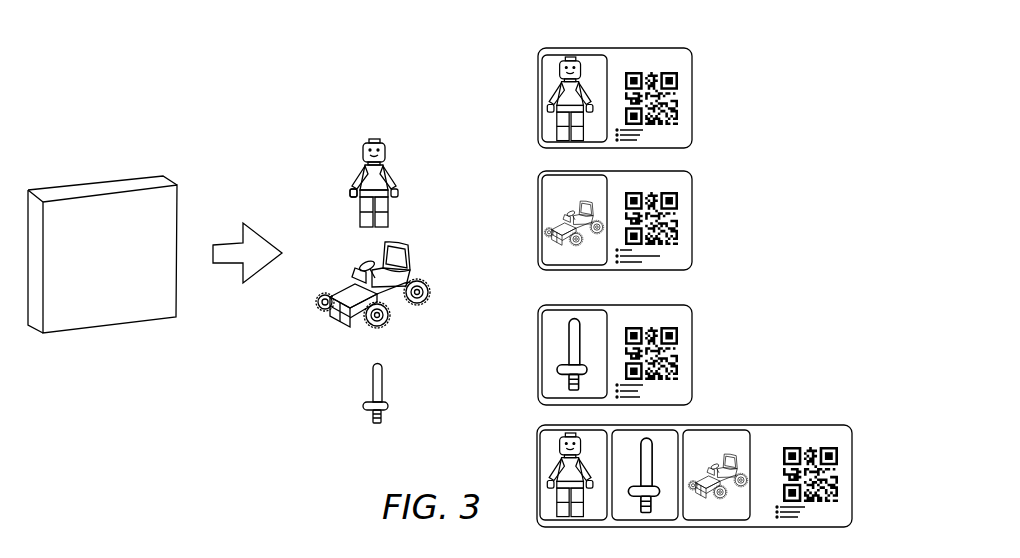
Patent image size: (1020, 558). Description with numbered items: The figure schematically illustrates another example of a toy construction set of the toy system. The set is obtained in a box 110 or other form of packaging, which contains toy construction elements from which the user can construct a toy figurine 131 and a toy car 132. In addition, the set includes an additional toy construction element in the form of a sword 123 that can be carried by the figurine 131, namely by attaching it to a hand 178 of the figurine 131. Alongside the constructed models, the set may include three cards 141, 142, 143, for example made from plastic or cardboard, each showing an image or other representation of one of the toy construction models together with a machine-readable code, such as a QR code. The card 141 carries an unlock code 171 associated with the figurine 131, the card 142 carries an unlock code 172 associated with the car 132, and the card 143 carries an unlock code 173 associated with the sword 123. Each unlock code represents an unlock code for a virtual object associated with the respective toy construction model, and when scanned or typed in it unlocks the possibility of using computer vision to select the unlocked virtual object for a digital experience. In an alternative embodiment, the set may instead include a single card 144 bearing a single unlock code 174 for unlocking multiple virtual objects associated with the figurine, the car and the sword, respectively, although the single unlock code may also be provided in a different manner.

The box 110 is at (70, 323).
The toy figurine 131 is at (353, 164).
The hand 178 is at (347, 195).
The toy car 132 is at (337, 320).
The sword 123 is at (370, 417).
The card 141 is at (664, 80).
The card 142 is at (677, 213).
The card 143 is at (677, 336).
The card 144 is at (717, 446).
The unlock code 171 is at (655, 62).
The unlock code 172 is at (677, 202).
The unlock code 173 is at (667, 317).
The single unlock code 174 is at (800, 443).